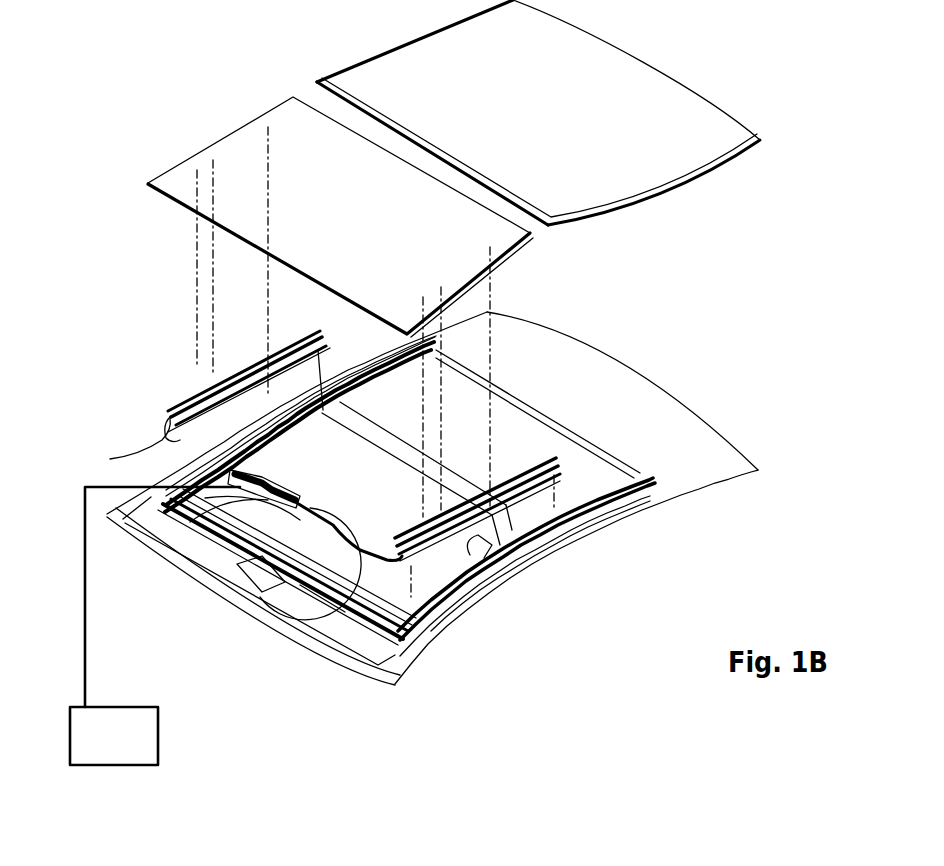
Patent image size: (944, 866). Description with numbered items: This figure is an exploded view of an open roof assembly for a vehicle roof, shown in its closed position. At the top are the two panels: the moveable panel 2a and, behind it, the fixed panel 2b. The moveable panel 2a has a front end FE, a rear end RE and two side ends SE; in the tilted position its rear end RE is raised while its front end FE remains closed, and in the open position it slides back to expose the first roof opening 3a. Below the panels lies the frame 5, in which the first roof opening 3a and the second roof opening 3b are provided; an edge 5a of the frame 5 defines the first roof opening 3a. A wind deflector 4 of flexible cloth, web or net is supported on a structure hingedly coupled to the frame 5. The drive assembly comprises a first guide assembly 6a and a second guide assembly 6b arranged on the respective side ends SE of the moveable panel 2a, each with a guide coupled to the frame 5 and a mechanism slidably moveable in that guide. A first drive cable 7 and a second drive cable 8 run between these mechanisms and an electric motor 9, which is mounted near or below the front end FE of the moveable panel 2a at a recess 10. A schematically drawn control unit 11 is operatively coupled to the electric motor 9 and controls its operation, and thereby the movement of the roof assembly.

The moveable panel 2a is at (361, 224).
The fixed panel 2b is at (562, 122).
The first roof opening 3a is at (350, 505).
The second roof opening 3b is at (536, 456).
The wind deflector 4 is at (162, 508).
The frame 5 is at (480, 618).
The edge of the frame 5a is at (489, 588).
The first guide assembly 6a is at (505, 531).
The second guide assembly 6b is at (168, 380).
The first drive cable 7 is at (326, 593).
The second drive cable 8 is at (128, 449).
The electric motor 9 is at (218, 522).
The recess 10 is at (265, 557).
The control unit 11 is at (126, 752).
The rear end RE is at (340, 122).
The side ends SE is at (225, 132).
The front end FE is at (237, 260).